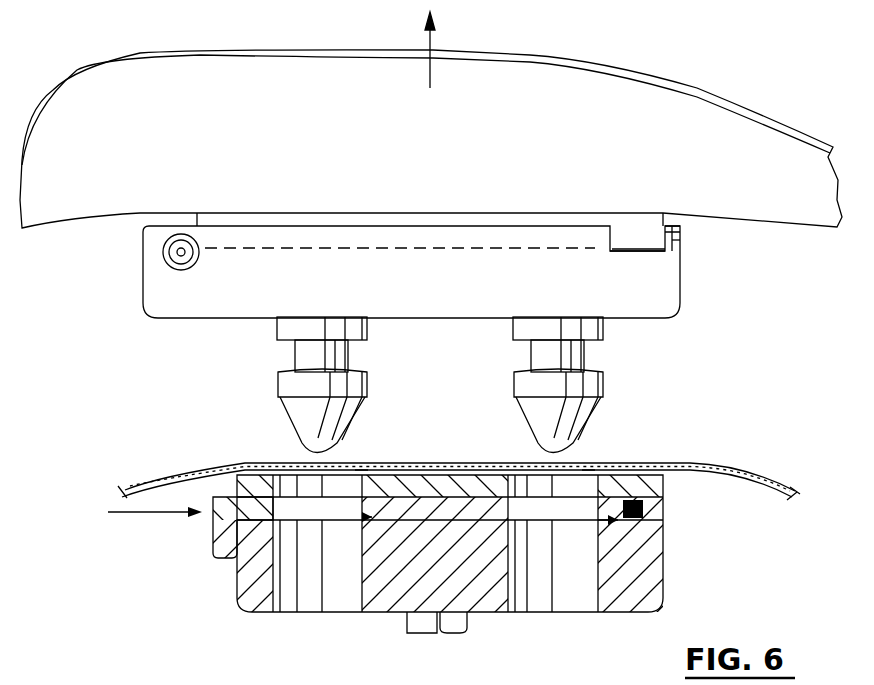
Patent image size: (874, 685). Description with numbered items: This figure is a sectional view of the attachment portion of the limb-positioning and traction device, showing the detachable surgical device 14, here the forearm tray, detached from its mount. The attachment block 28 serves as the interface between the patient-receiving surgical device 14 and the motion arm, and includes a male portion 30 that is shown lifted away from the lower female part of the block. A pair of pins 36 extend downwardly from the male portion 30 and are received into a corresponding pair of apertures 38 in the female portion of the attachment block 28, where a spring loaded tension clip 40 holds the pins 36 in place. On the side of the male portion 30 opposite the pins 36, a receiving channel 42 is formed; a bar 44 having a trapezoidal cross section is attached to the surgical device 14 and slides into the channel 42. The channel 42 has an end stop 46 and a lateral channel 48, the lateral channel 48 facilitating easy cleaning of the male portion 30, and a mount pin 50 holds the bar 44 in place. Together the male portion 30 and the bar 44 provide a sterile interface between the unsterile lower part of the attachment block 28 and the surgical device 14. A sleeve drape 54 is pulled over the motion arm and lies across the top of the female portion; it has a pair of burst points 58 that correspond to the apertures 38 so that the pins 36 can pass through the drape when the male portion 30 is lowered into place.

The surgical device 14 is at (679, 138).
The attachment block 28 is at (188, 438).
The male portion 30 is at (163, 293).
The pins 36 is at (295, 417).
The apertures 38 is at (308, 595).
The spring loaded tension clip 40 is at (225, 533).
The receiving channel 42 is at (492, 250).
The bar 44 is at (655, 232).
The end stop 46 is at (675, 246).
The lateral channel 48 is at (655, 258).
The mount pin 50 is at (162, 252).
The sleeve drape 54 is at (738, 462).
The burst points 58 is at (360, 462).